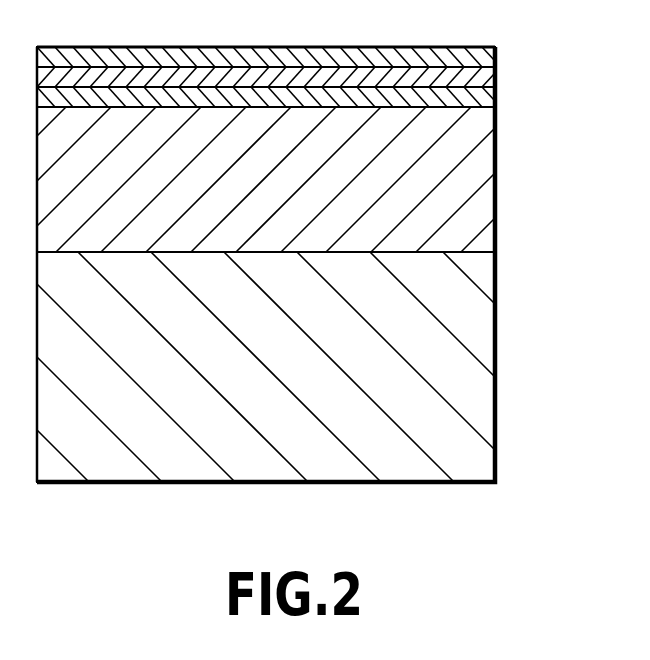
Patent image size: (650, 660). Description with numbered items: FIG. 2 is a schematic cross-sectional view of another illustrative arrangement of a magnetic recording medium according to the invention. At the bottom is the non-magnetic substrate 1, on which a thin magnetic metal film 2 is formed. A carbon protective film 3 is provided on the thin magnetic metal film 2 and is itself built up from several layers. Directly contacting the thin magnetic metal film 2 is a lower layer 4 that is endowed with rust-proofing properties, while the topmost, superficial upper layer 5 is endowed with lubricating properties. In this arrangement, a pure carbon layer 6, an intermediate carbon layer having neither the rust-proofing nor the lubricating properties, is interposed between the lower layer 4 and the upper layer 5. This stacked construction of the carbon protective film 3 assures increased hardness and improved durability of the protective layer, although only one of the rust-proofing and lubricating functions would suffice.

The non-magnetic substrate 1 is at (475, 318).
The thin magnetic metal film 2 is at (465, 182).
The carbon protective film 3 is at (317, 75).
The lower layer 4 is at (294, 111).
The upper layer 5 is at (480, 56).
The pure carbon layer 6 is at (482, 73).